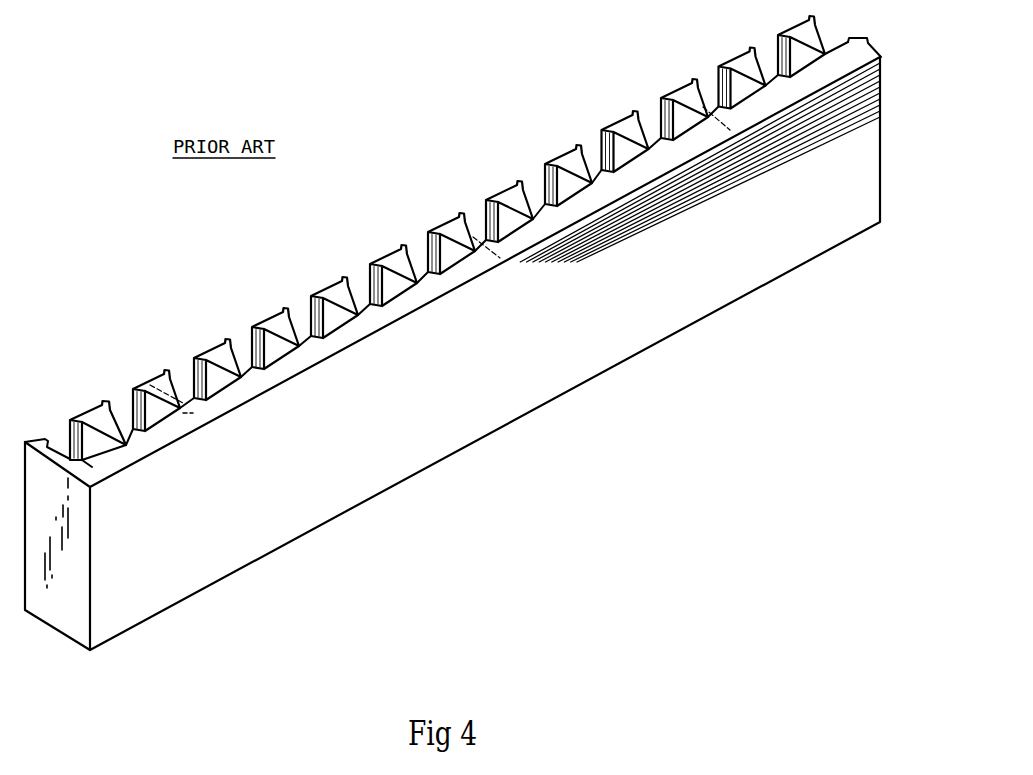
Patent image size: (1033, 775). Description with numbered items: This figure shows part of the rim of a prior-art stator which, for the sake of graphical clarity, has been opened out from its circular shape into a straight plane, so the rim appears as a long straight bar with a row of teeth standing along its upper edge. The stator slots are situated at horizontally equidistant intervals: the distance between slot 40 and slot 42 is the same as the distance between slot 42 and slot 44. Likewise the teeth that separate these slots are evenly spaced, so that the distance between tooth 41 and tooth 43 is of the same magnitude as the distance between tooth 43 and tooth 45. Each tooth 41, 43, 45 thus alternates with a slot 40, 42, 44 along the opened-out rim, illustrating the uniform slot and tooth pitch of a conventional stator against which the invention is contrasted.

The stator slot 40 is at (108, 462).
The stator tooth 41 is at (87, 409).
The stator slot 42 is at (186, 436).
The stator tooth 43 is at (150, 378).
The stator slot 44 is at (245, 405).
The stator tooth 45 is at (209, 349).